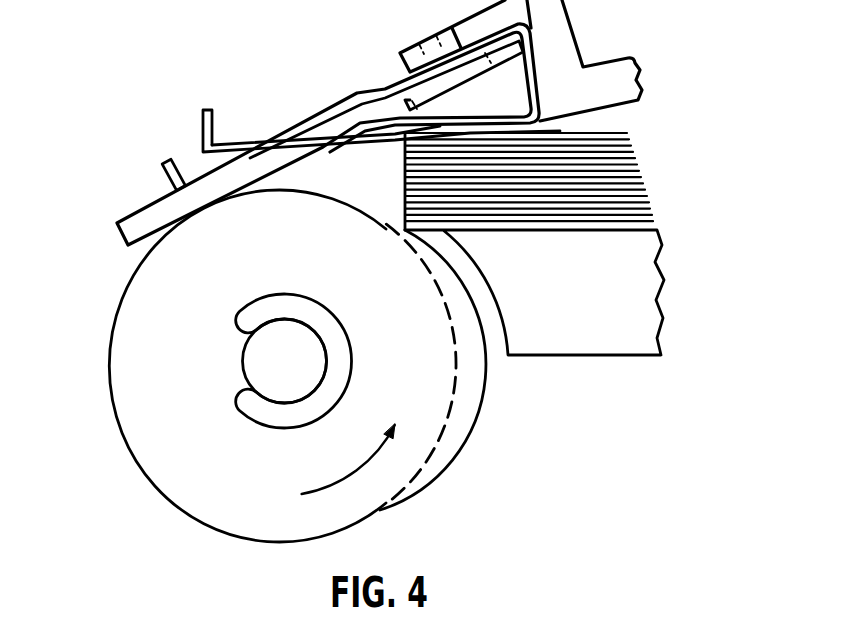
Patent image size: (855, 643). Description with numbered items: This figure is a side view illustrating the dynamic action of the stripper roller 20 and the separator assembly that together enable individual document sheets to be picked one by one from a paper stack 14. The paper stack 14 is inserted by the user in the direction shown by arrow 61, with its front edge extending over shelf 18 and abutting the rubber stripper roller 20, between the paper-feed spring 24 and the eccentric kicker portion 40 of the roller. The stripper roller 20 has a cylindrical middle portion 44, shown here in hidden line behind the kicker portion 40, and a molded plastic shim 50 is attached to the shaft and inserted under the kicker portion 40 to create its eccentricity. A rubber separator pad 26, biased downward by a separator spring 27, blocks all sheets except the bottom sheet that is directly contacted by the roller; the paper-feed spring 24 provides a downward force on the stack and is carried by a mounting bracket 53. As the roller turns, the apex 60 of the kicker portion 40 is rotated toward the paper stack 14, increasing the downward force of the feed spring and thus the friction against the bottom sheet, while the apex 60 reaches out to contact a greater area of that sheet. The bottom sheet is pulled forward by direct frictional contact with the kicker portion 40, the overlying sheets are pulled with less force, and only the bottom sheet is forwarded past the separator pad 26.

The paper stack 14 is at (634, 134).
The shelf 18 is at (590, 308).
The stripper roller 20 is at (499, 464).
The paper-feed spring 24 is at (231, 142).
The separator pad 26 is at (116, 222).
The separator spring 27 is at (163, 172).
The kicker portion 40 is at (244, 482).
The cylindrical middle portion 44 is at (453, 345).
The shim 50 is at (328, 307).
The bracket 53 is at (602, 65).
The apex 60 is at (485, 375).
The arrow 61 is at (667, 177).